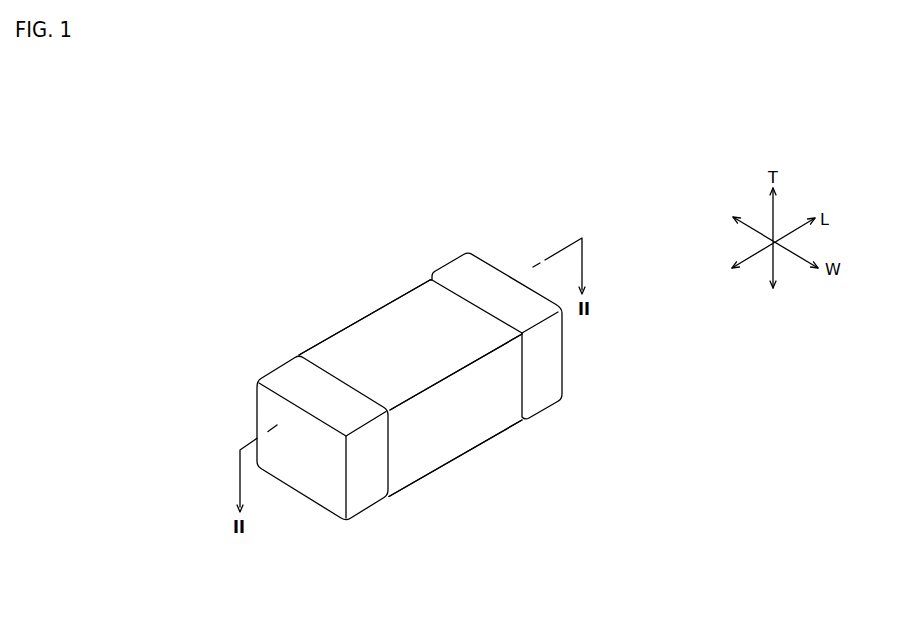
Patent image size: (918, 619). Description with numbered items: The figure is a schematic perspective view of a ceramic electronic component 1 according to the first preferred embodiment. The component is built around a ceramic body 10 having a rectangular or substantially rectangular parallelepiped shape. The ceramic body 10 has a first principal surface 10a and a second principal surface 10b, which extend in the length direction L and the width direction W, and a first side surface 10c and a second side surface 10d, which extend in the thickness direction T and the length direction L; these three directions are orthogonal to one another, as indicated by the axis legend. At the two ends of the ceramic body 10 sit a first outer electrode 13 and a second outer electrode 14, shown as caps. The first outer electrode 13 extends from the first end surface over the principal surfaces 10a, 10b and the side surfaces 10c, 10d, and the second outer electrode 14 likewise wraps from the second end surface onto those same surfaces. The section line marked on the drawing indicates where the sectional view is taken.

The ceramic electronic component 1 is at (507, 228).
The ceramic body 10 is at (397, 283).
The first principal surface 10a is at (392, 325).
The second principal surface 10b is at (443, 468).
The first side surface 10c is at (420, 287).
The second side surface 10d is at (408, 473).
The first outer electrode 13 is at (256, 422).
The second outer electrode 14 is at (566, 356).